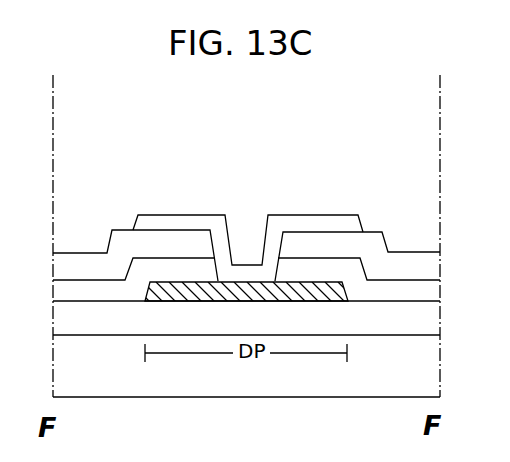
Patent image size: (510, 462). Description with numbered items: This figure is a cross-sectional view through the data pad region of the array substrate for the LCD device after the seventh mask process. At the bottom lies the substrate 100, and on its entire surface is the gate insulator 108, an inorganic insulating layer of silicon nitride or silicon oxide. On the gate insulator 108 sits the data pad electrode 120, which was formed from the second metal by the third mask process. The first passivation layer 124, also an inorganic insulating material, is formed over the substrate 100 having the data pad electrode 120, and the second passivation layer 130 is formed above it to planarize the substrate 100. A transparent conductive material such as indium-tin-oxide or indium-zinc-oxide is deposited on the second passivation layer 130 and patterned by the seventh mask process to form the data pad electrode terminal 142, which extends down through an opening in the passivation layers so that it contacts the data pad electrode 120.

The substrate 100 is at (423, 375).
The gate insulator 108 is at (98, 288).
The data pad electrode 120 is at (300, 282).
The first passivation layer 124 is at (357, 248).
The second passivation layer 130 is at (155, 224).
The data pad electrode terminal 142 is at (218, 214).